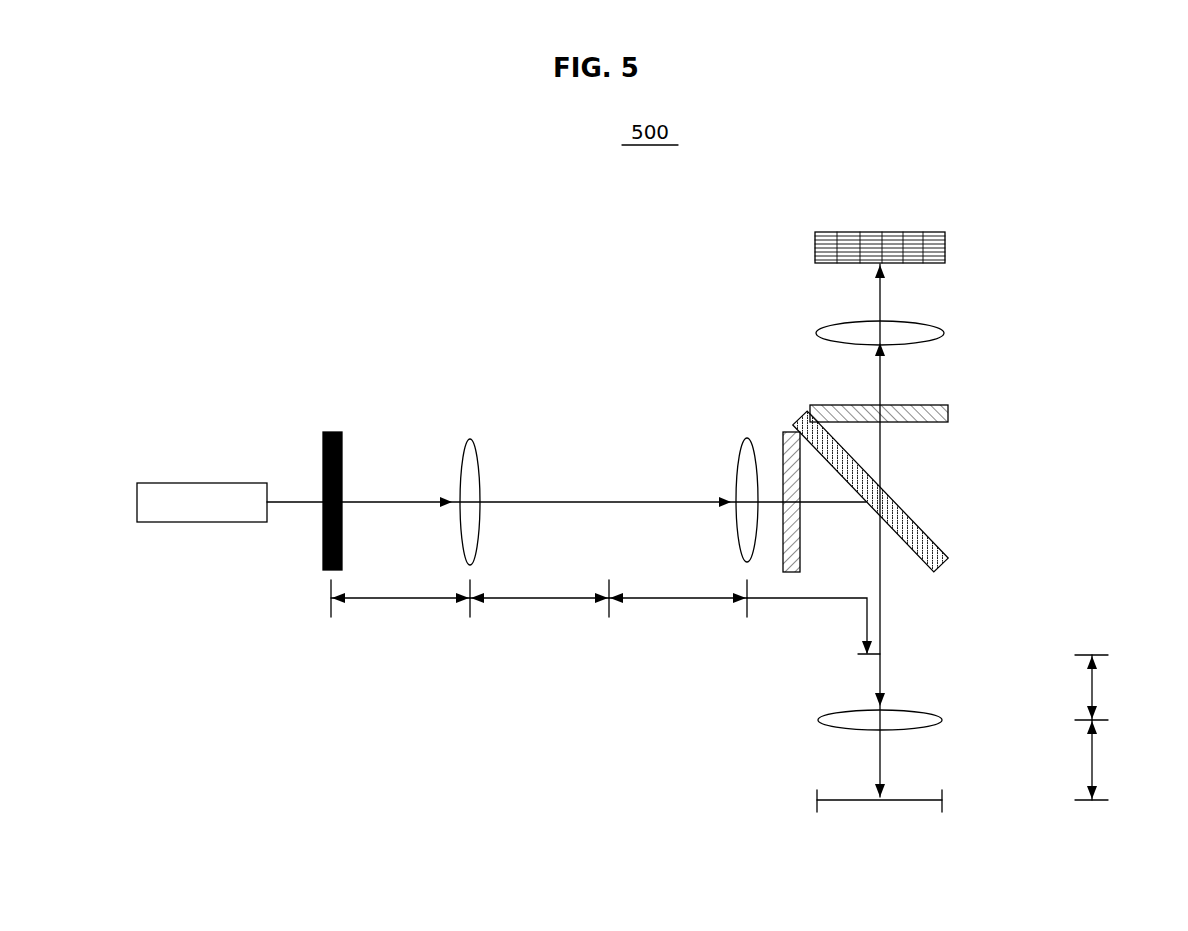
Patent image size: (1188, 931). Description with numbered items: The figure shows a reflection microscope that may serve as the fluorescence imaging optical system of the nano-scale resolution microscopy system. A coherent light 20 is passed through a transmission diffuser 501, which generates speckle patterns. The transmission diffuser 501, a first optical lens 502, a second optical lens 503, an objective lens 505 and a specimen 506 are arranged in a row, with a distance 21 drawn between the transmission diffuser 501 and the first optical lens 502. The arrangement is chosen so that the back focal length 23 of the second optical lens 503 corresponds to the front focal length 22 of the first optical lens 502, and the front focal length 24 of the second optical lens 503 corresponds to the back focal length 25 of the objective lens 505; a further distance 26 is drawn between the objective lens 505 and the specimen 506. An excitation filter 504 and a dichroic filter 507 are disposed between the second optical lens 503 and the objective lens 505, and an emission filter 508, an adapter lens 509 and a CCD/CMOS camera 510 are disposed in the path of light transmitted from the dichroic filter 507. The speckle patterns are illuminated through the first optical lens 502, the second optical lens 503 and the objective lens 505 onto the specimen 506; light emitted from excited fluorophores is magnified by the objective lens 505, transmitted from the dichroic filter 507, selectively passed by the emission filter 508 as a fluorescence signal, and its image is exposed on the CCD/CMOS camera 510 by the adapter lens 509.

The coherent light 20 is at (198, 483).
The transmission diffuser 501 is at (331, 432).
The first optical lens 502 is at (470, 439).
The second optical lens 503 is at (739, 458).
The excitation filter 504 is at (785, 432).
The objective lens 505 is at (797, 415).
The specimen 506 is at (942, 720).
The dichroic filter 507 is at (945, 800).
The emission filter 508 is at (900, 404).
The adapter lens 509 is at (945, 333).
The CCD/CMOS camera 510 is at (945, 247).
The distance between pinhole and lens 21 is at (400, 600).
The front focal length of the first optical lens 22 is at (538, 600).
The back focal length of the second optical lens 23 is at (677, 600).
The front focal length of the second optical lens 24 is at (865, 627).
The back focal length of the objective lens 25 is at (1094, 683).
The working distance of objective 26 is at (1094, 757).